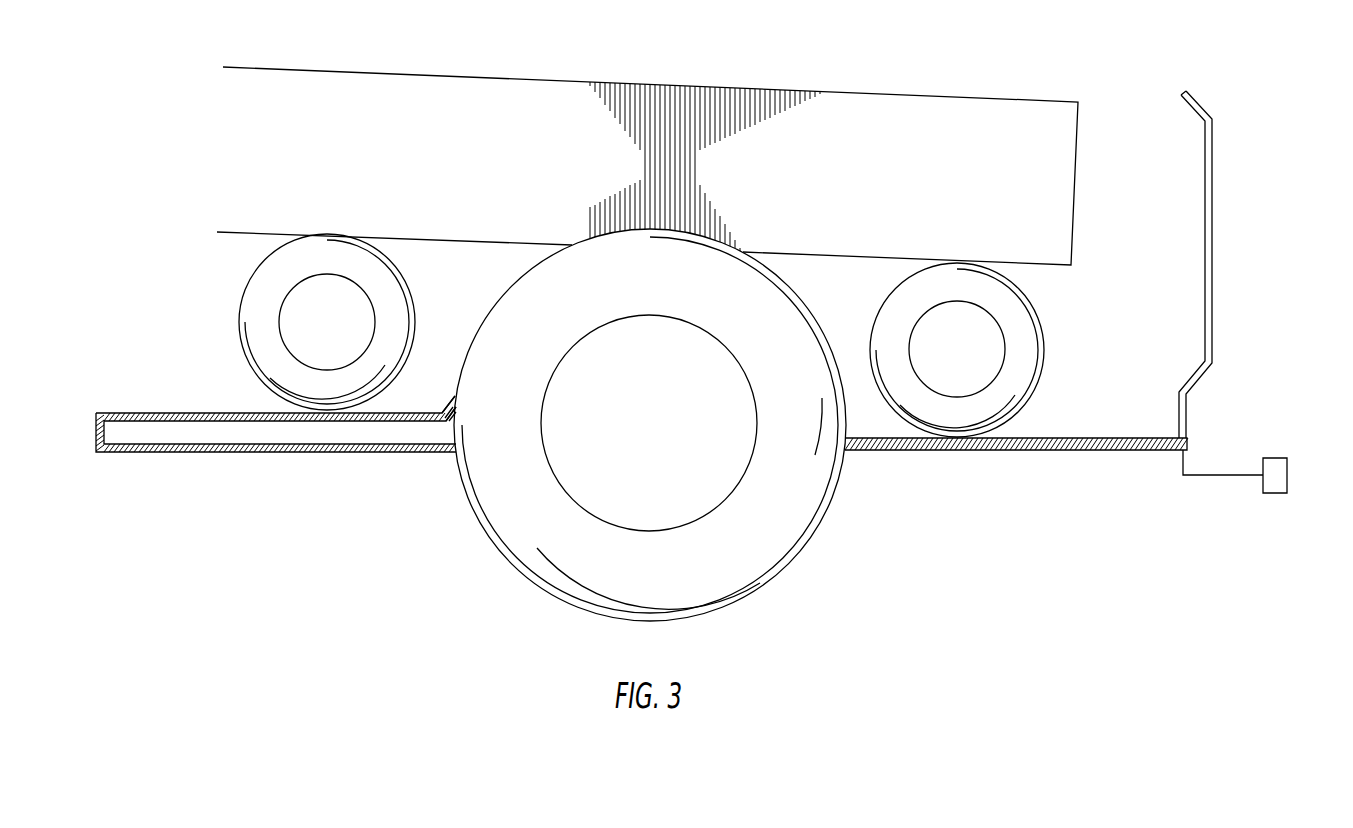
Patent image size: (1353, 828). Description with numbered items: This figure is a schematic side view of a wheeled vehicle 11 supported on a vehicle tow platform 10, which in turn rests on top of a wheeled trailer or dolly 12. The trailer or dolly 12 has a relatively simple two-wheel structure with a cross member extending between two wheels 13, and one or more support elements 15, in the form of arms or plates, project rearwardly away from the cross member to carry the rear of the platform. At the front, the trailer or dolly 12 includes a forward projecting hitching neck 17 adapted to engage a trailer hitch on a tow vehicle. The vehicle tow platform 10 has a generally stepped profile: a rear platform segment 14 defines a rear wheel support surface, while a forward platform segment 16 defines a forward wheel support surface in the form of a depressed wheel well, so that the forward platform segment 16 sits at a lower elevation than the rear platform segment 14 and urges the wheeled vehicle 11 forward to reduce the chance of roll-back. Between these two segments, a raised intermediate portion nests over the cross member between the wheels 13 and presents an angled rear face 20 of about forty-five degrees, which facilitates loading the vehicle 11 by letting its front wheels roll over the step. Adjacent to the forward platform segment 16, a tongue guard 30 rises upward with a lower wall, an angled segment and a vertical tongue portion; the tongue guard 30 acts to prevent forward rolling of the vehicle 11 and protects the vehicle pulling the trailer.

The vehicle tow platform 10 is at (1238, 140).
The wheeled vehicle 11 is at (1008, 99).
The trailer or dolly 12 is at (907, 450).
The wheels 13 is at (815, 538).
The rear platform segment 14 is at (152, 413).
The support elements 15 is at (280, 452).
The forward platform segment 16 is at (1098, 437).
The hitching neck 17 is at (1217, 475).
The angled rear face 20 is at (444, 396).
The tongue guard 30 is at (1218, 233).